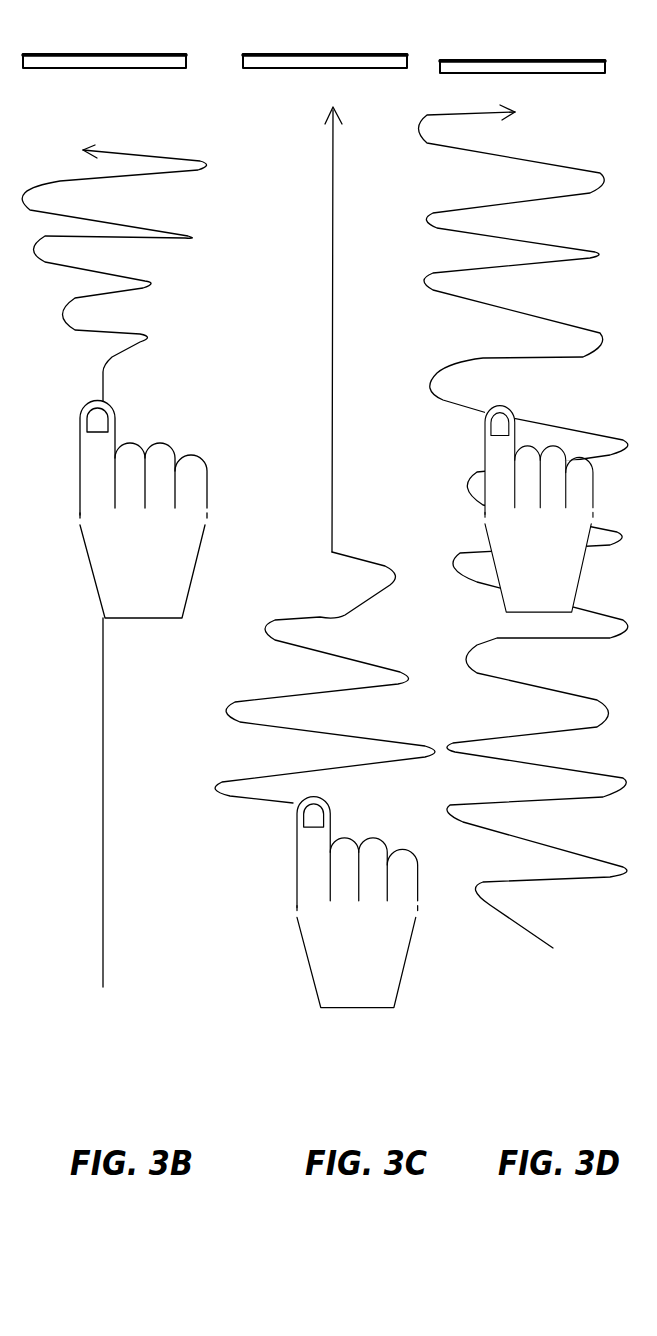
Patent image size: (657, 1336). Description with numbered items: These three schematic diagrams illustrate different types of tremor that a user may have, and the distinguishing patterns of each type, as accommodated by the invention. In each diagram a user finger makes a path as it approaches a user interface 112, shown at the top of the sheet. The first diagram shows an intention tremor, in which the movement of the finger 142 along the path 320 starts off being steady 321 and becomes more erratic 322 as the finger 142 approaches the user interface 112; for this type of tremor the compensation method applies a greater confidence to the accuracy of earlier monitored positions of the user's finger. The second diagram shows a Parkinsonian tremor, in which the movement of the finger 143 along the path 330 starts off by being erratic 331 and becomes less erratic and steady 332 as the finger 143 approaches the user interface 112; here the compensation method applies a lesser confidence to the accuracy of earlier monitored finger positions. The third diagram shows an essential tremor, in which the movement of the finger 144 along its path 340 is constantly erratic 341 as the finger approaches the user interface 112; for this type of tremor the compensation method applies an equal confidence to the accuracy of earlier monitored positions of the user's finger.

In FIG. 3B, the user interface 112 is at (147, 68).
In FIG. 3C, the user interface 112 is at (368, 68).
In FIG. 3D, the user interface 112 is at (567, 73).
In FIG. 3B, the user finger 142 is at (157, 607).
In FIG. 3C, the user finger 143 is at (377, 988).
In FIG. 3D, the user finger 144 is at (538, 595).
In FIG. 3B, the path 320 is at (122, 566).
In FIG. 3B, the steady movement 321 is at (102, 768).
In FIG. 3B, the erratic movement 322 is at (150, 278).
In FIG. 3C, the path 330 is at (312, 485).
In FIG. 3C, the erratic movement 331 is at (287, 615).
In FIG. 3C, the steady movement 332 is at (332, 415).
In FIG. 3D, the path 340 is at (537, 536).
In FIG. 3D, the erratic movement 341 is at (567, 315).